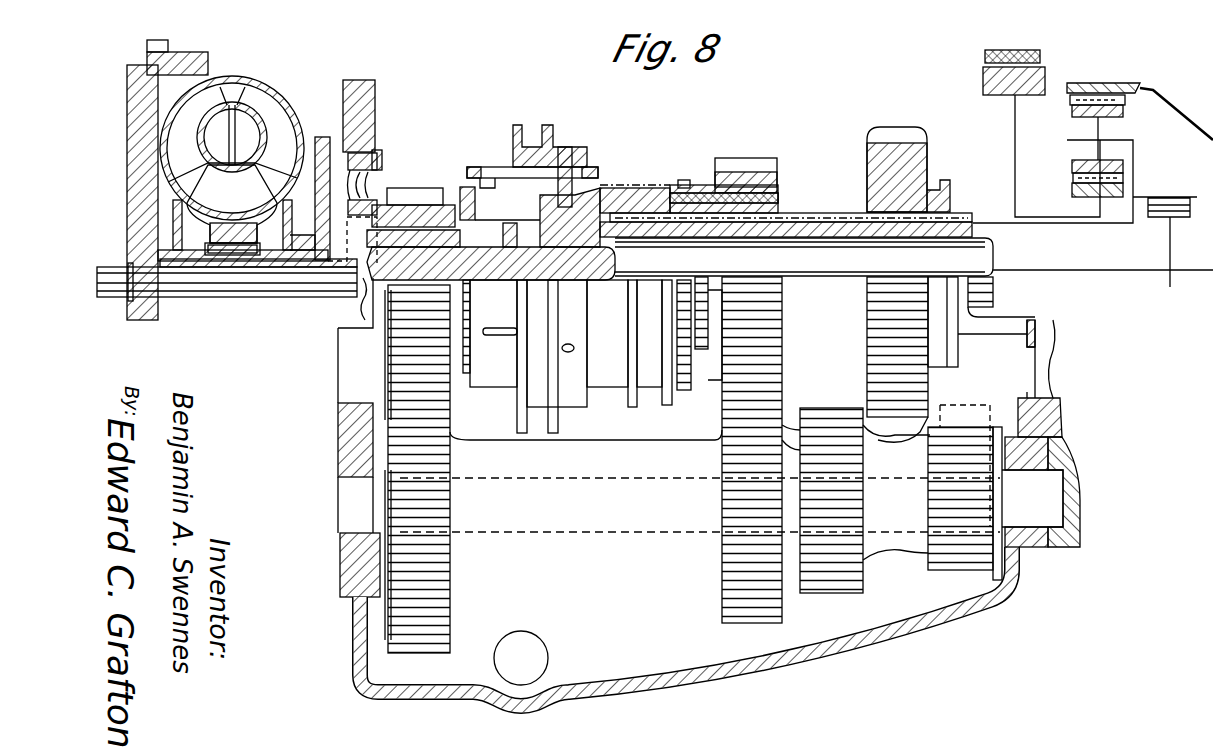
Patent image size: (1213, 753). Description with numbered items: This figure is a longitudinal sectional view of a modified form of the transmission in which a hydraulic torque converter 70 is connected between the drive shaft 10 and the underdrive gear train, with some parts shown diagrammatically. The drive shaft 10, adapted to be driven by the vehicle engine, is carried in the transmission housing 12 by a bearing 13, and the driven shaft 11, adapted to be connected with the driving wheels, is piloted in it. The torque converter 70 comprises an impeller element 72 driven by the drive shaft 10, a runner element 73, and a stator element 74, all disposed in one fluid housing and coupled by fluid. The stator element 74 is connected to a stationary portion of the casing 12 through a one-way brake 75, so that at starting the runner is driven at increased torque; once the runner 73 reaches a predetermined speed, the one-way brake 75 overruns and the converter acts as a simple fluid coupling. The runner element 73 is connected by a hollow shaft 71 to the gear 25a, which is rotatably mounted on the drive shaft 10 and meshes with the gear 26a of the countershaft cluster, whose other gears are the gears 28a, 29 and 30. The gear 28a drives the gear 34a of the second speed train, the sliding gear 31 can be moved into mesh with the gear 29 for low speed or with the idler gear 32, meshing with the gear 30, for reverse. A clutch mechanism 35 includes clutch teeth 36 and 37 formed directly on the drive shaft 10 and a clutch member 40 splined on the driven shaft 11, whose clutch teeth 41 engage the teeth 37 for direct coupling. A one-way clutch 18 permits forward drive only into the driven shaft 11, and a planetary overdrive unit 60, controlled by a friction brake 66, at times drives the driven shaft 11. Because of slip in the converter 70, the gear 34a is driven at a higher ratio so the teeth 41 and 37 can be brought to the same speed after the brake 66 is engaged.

The drive shaft 10 is at (360, 300).
The driven shaft 11 is at (990, 252).
The transmission housing 12 is at (360, 110).
The bearing 13 is at (375, 155).
The one-way clutch 18 is at (1160, 218).
The gear 25a is at (410, 195).
The gear 26a is at (450, 612).
The gear 28a is at (722, 607).
The gear 29 is at (845, 593).
The gear 30 is at (953, 573).
The gear 31 is at (893, 128).
The idler gear 32 is at (970, 405).
The gear 34a is at (750, 157).
The clutch mechanism 35 is at (580, 134).
The clutch teeth 36 is at (462, 186).
The clutch teeth 37 is at (480, 232).
The clutch member 40 is at (571, 250).
The clutch teeth 41 is at (540, 219).
The planetary overdrive unit 60 is at (1141, 81).
The friction brake 66 is at (1063, 63).
The hydraulic torque converter 70 is at (250, 73).
The hollow shaft 71 is at (280, 268).
The impeller element 72 is at (272, 100).
The runner element 73 is at (194, 160).
The stator element 74 is at (240, 200).
The one-way brake 75 is at (227, 256).